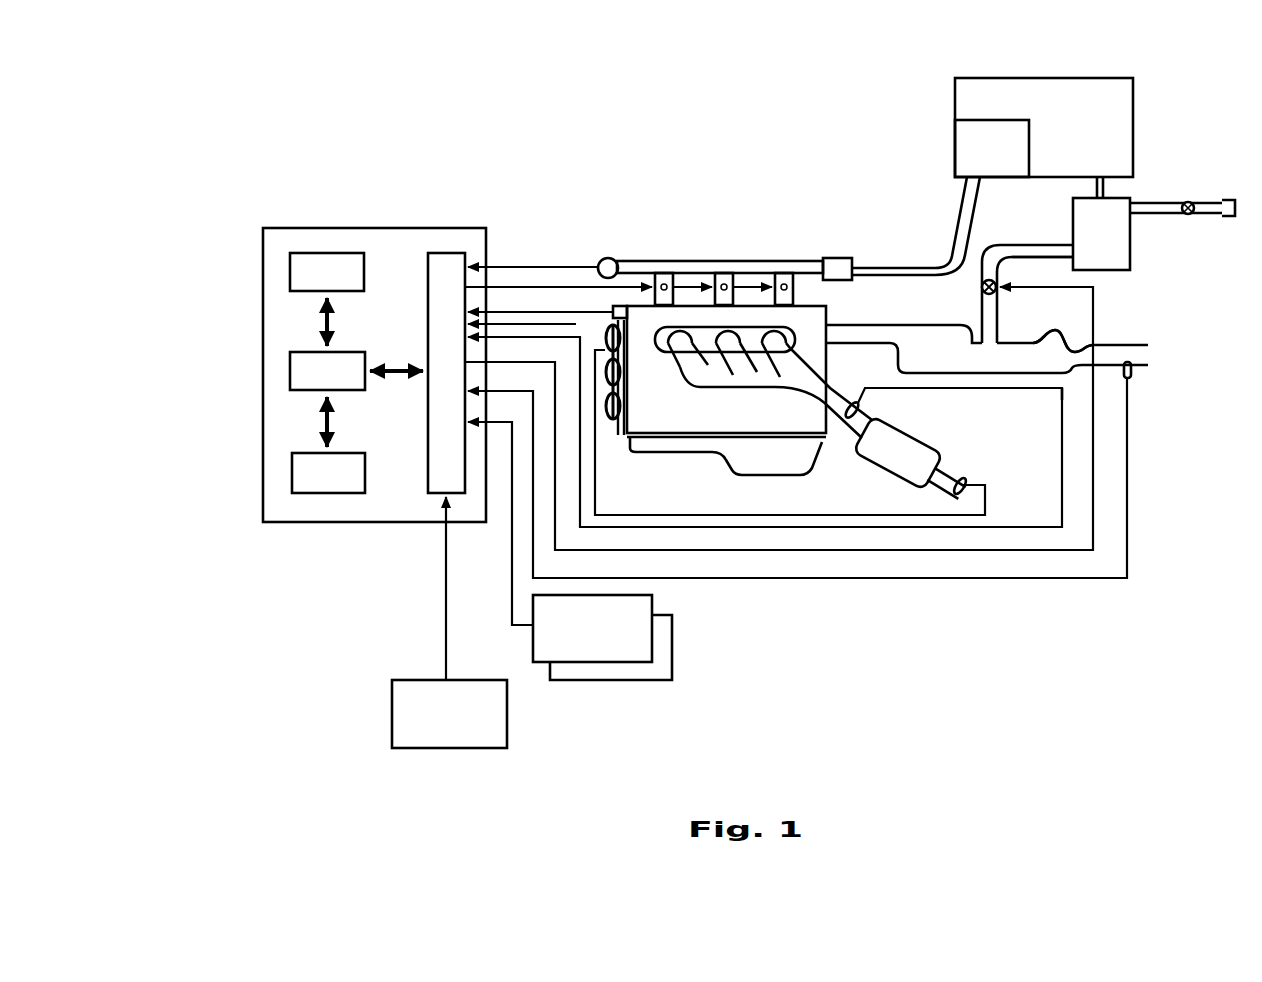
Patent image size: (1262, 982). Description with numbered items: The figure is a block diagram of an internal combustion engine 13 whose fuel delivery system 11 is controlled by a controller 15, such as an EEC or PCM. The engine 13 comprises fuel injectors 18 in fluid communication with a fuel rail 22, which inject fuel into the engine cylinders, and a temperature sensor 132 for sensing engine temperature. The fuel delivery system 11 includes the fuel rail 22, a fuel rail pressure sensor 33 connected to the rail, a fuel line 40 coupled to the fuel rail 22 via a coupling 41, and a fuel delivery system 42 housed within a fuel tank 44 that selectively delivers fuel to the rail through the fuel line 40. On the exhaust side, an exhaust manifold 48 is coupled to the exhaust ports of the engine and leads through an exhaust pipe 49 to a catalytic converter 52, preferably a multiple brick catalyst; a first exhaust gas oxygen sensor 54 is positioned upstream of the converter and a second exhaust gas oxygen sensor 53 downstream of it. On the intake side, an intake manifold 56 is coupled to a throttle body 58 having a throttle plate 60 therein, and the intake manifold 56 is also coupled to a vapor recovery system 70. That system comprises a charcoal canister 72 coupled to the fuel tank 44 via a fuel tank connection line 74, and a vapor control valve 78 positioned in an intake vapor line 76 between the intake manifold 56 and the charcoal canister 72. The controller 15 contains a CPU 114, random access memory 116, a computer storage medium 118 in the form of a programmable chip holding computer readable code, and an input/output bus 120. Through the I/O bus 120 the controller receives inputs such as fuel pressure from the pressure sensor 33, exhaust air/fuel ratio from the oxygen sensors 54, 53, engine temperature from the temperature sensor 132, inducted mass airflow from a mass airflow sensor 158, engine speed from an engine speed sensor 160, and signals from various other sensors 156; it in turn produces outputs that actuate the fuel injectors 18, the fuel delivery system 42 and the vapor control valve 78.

The fuel delivery system 11 is at (853, 235).
The internal combustion engine 13 is at (827, 374).
The controller 15 is at (430, 228).
The fuel injectors 18 is at (779, 277).
The fuel rail 22 is at (793, 260).
The fuel rail pressure sensor 33 is at (613, 257).
The fuel line 40 is at (870, 274).
The coupling 41 is at (855, 258).
The fuel delivery system 42 is at (1029, 135).
The fuel tank 44 is at (1133, 113).
The exhaust manifold 48 is at (712, 392).
The exhaust pipe 49 is at (942, 495).
The catalytic converter 52 is at (937, 443).
The second exhaust gas oxygen sensor 53 is at (963, 478).
The first exhaust gas oxygen sensor 54 is at (858, 403).
The intake manifold 56 is at (935, 325).
The throttle body 58 is at (1066, 392).
The throttle plate 60 is at (1048, 361).
The vapor recovery system 70 is at (1035, 238).
The charcoal canister 72 is at (1130, 246).
The fuel tank connection line 74 is at (1108, 193).
The intake vapor line 76 is at (1030, 257).
The vapor control valve 78 is at (1000, 293).
The CPU 114 is at (290, 365).
The random access memory 116 is at (290, 268).
The computer storage medium 118 is at (290, 465).
The input/output bus 120 is at (428, 472).
The temperature sensor 132 is at (613, 308).
The other sensors 156 is at (672, 640).
The mass airflow sensor 158 is at (1133, 378).
The engine speed sensor 160 is at (392, 695).